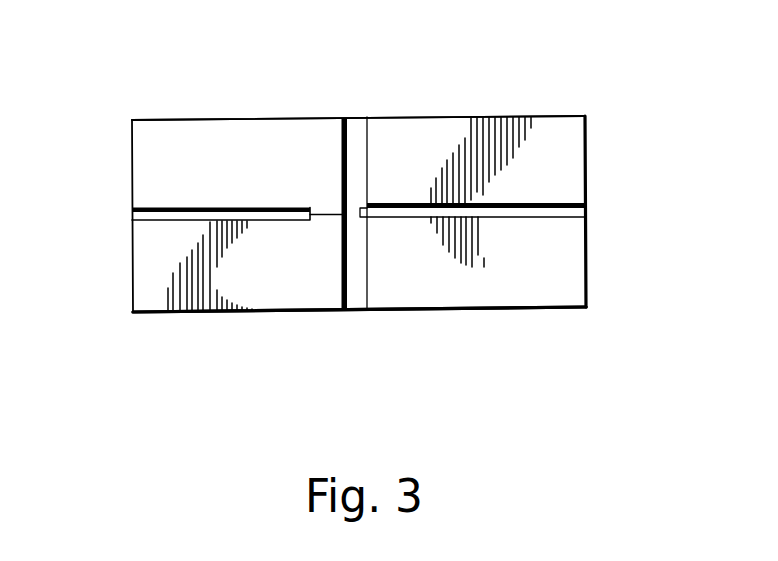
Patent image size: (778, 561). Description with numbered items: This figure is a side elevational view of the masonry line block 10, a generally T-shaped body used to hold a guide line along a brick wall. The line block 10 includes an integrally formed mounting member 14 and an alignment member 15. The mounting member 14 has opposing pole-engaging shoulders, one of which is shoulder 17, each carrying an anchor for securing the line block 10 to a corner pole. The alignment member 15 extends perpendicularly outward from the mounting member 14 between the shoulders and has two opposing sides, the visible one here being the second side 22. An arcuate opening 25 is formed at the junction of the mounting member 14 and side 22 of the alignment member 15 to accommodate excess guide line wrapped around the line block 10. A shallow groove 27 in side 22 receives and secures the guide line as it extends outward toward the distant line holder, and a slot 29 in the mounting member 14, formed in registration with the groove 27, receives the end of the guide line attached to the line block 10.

The line block 10 is at (97, 105).
The mounting member 14 is at (297, 118).
The alignment member 15 is at (550, 308).
The pole-engaging shoulder 17 is at (222, 144).
The second opposing side 22 is at (472, 142).
The arcuate opening 25 is at (354, 128).
The shallow groove 27 is at (560, 203).
The slot 29 is at (153, 222).